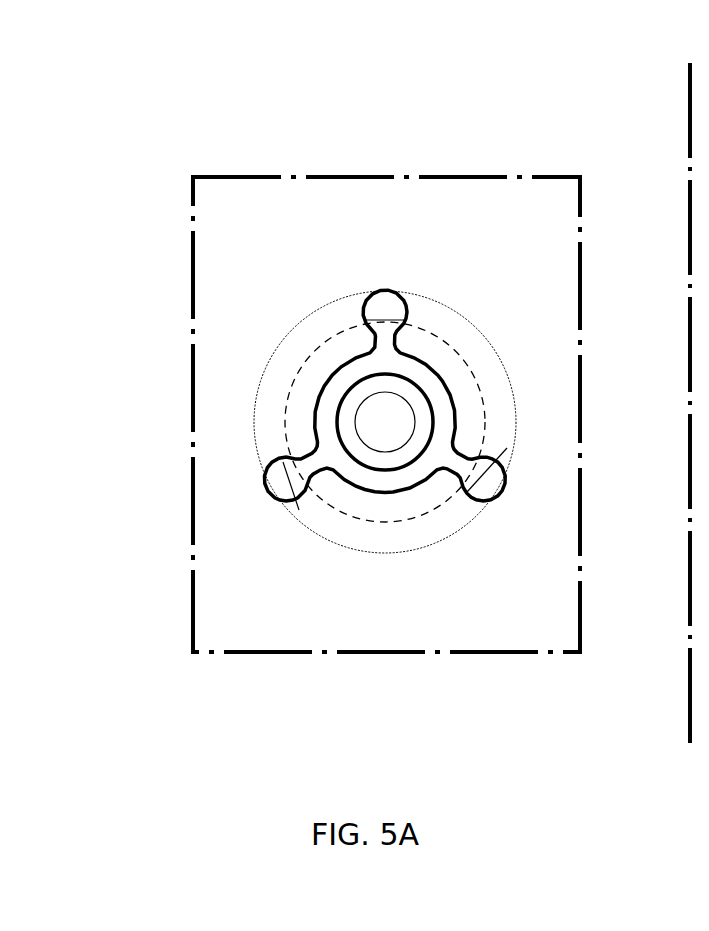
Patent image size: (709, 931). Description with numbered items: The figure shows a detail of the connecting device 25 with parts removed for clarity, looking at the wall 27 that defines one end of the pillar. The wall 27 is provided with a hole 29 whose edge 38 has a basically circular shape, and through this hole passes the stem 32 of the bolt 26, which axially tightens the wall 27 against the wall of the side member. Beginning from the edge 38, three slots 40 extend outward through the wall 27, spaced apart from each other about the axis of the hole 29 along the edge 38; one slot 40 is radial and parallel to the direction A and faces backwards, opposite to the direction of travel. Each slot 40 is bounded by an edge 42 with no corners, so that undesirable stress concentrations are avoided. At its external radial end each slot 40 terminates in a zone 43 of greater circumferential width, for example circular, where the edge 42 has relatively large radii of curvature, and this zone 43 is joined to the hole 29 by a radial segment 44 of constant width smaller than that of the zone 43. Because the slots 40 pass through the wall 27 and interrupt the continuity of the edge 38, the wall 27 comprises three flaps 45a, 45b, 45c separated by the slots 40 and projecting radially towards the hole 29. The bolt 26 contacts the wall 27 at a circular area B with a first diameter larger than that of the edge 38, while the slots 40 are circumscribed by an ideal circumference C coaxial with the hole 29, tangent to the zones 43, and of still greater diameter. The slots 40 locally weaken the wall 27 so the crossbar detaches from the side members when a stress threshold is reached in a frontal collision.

The direction A is at (688, 108).
The connecting device 25 is at (550, 170).
The bolt 26 is at (389, 409).
The wall 27 is at (510, 376).
The hole 29 is at (389, 409).
The stem 32 is at (405, 487).
The edge 38 is at (389, 409).
The slot 40 is at (389, 402).
The edge 42 is at (389, 388).
The zone 43 is at (354, 374).
The radial segment 44 is at (389, 402).
The flap 45a is at (332, 472).
The flap 45b is at (332, 422).
The flap 45c is at (480, 385).
The area B is at (392, 322).
The circumference C is at (412, 392).